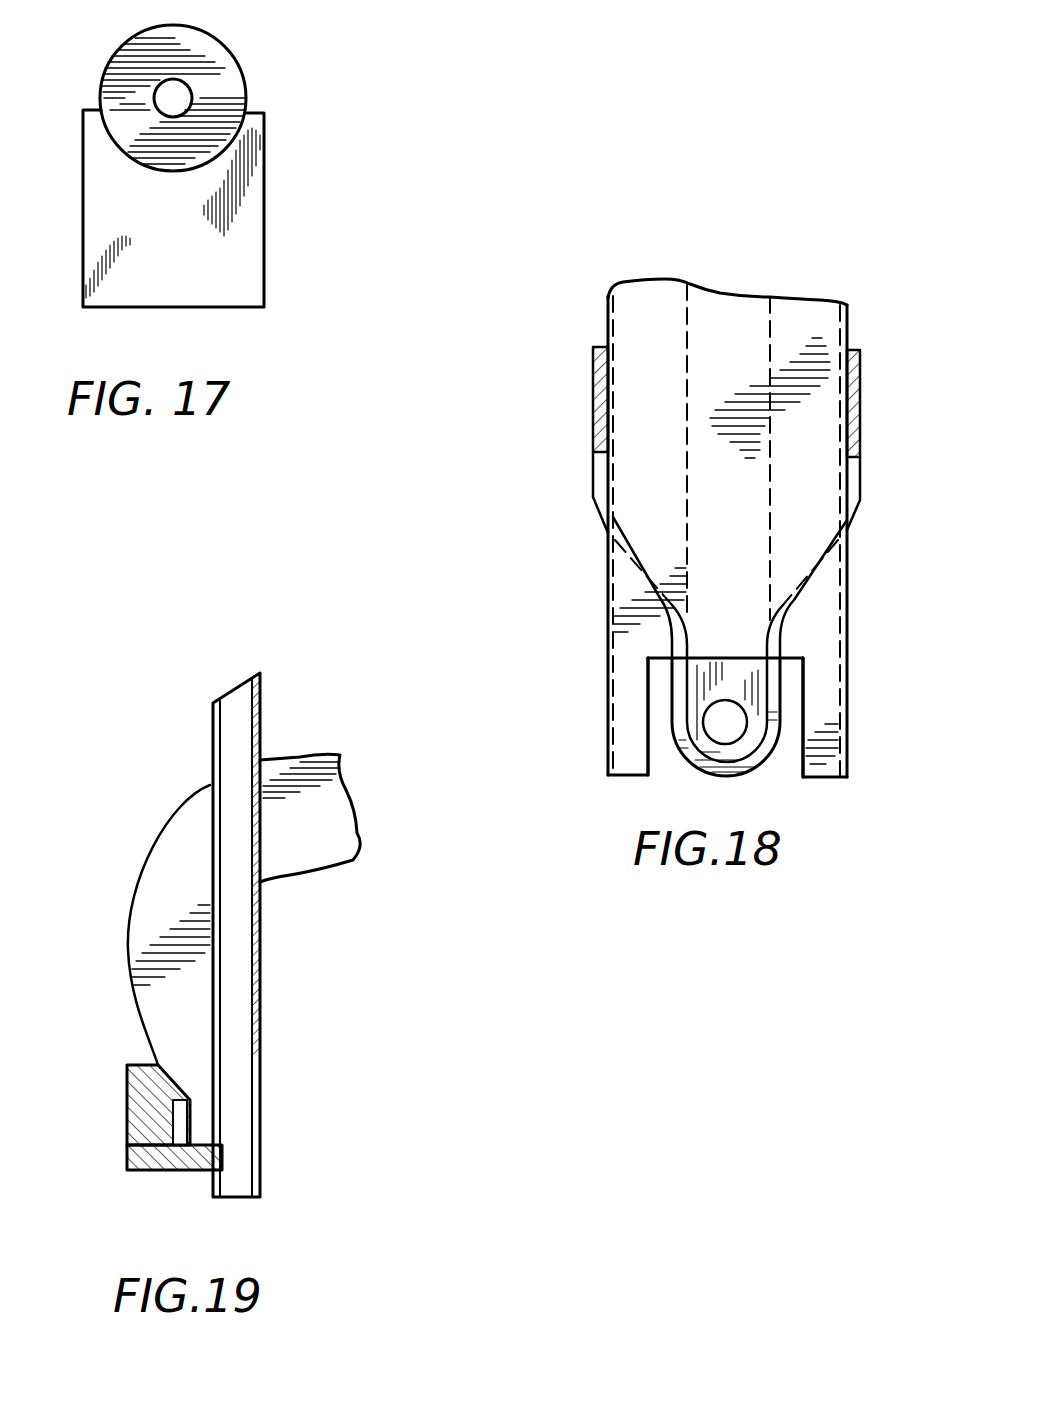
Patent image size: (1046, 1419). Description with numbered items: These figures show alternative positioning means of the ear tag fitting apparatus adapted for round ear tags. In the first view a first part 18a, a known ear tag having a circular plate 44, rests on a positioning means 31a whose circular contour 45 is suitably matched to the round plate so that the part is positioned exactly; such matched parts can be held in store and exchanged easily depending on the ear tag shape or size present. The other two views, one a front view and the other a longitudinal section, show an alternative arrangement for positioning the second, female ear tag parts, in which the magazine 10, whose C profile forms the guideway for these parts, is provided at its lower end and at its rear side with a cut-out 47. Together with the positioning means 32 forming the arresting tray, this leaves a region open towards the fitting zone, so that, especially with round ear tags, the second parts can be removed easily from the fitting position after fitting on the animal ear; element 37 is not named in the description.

In FIG. 18, the magazine 10 is at (825, 593).
In FIG. 19, the magazine 10 is at (233, 773).
In FIG. 17, the first part 18a is at (233, 53).
In FIG. 17, the positioning means 31a is at (240, 250).
In FIG. 18, the positioning means 32 is at (775, 747).
In FIG. 19, the positioning means 32 is at (128, 1167).
In FIG. 19, the clamp block 37 is at (142, 1083).
In FIG. 17, the circular plate 44 is at (233, 90).
In FIG. 17, the circular contour 45 is at (237, 140).
In FIG. 18, the cut-out 47 is at (807, 693).
In FIG. 19, the cut-out 47 is at (262, 1132).